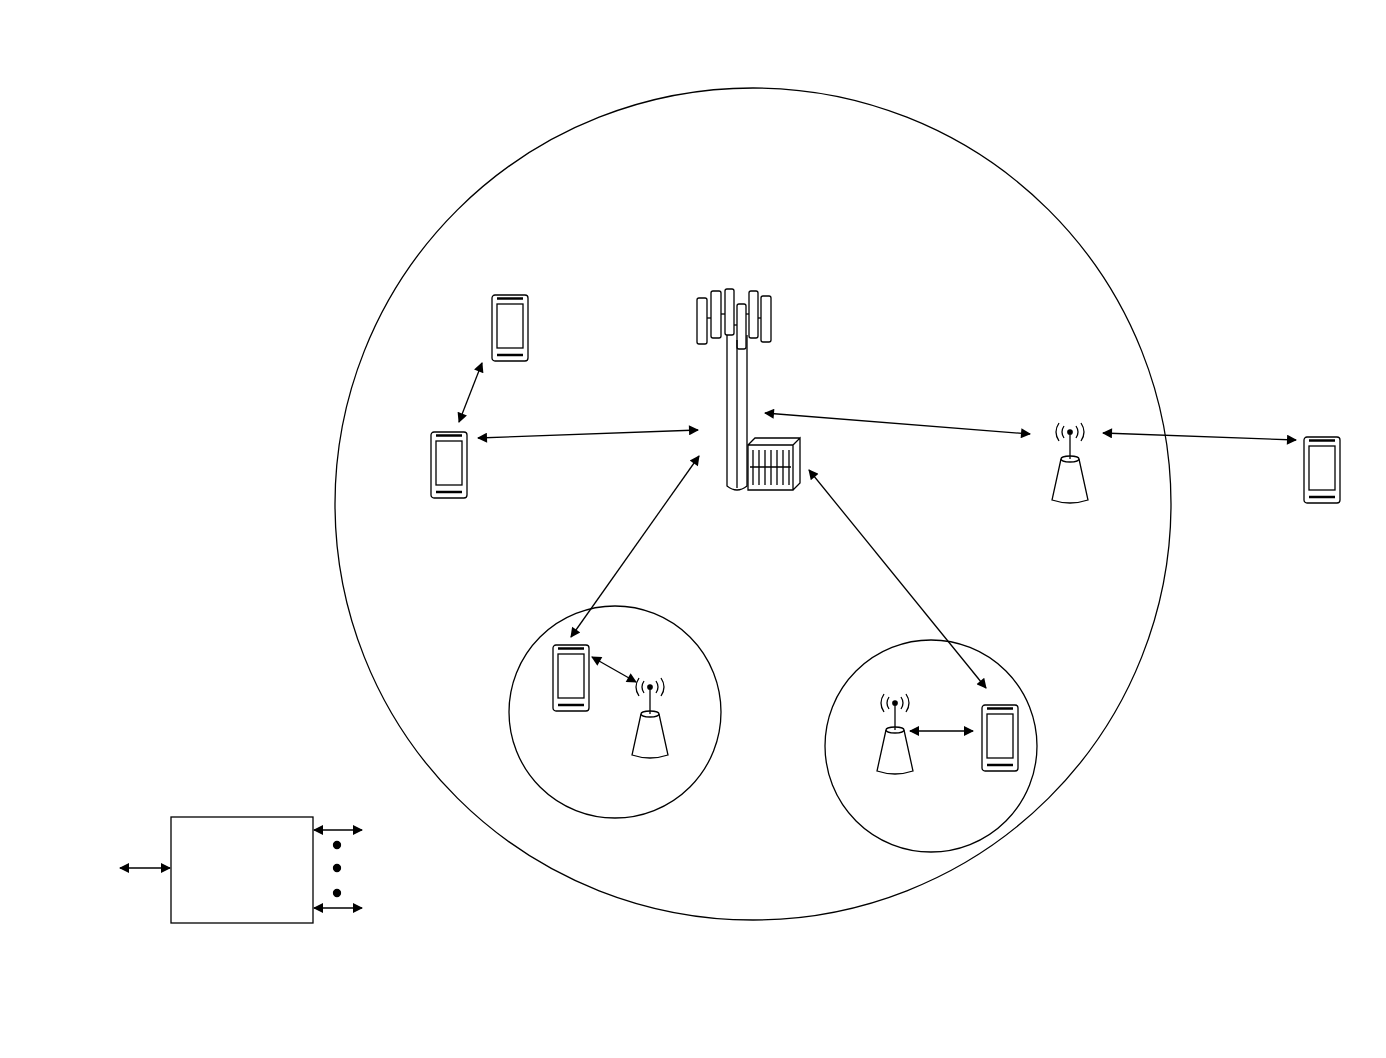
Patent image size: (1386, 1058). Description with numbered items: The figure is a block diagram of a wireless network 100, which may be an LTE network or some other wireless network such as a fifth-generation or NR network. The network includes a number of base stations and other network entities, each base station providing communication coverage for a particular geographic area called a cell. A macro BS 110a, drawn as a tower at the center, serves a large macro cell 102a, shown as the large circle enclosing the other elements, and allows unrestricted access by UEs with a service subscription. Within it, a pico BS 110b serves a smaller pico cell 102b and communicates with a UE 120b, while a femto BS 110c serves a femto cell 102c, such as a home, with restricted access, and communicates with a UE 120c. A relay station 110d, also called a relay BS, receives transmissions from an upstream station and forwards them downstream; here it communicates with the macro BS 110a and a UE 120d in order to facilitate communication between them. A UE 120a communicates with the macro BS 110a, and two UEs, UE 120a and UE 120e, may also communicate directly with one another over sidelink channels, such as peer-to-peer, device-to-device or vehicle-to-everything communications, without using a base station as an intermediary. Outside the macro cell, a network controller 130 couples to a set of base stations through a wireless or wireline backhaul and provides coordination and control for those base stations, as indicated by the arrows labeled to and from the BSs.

The wireless network 100 is at (224, 80).
The macro cell 102a is at (1037, 187).
The pico cell 102b is at (710, 652).
The femto cell 102c is at (854, 654).
The macro BS 110a is at (744, 282).
The pico BS 110b is at (673, 748).
The femto BS 110c is at (874, 764).
The relay station 110d is at (1072, 420).
The UE 120a is at (430, 460).
The UE 120b is at (556, 712).
The UE 120c is at (985, 773).
The UE 120d is at (1326, 436).
The UE 120e is at (490, 312).
The network controller 130 is at (239, 814).